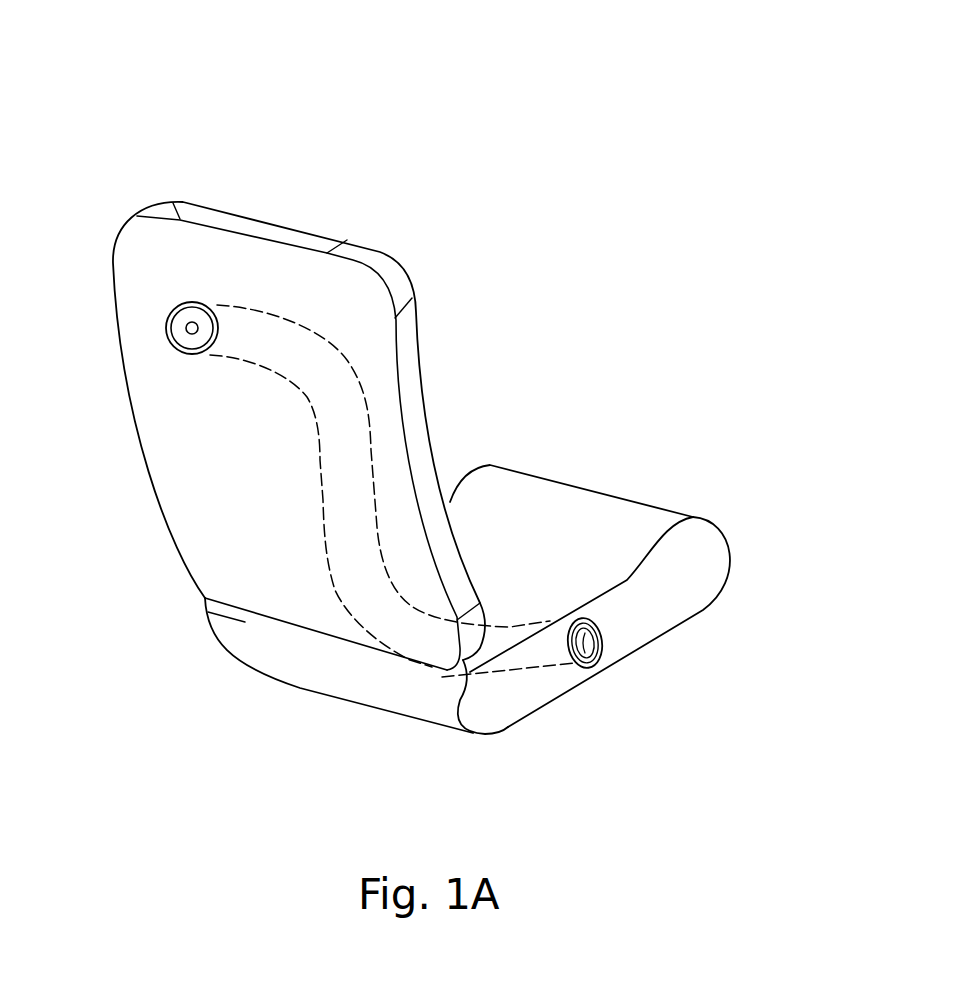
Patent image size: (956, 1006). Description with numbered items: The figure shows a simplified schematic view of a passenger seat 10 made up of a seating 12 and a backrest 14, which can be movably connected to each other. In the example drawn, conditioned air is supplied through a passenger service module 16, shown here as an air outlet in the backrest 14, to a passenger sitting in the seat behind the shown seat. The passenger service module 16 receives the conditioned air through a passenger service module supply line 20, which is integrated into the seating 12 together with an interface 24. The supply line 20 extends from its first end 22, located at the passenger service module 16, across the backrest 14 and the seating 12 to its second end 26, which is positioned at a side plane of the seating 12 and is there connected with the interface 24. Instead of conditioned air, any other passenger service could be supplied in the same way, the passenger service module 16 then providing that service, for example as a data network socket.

The passenger seat 10 is at (572, 120).
The seating 12 is at (565, 520).
The backrest 14 is at (295, 222).
The passenger service module 16 is at (183, 357).
The passenger service module supply line 20 is at (327, 543).
The first end 22 is at (208, 300).
The interface 24 is at (572, 660).
The second end 26 is at (555, 656).